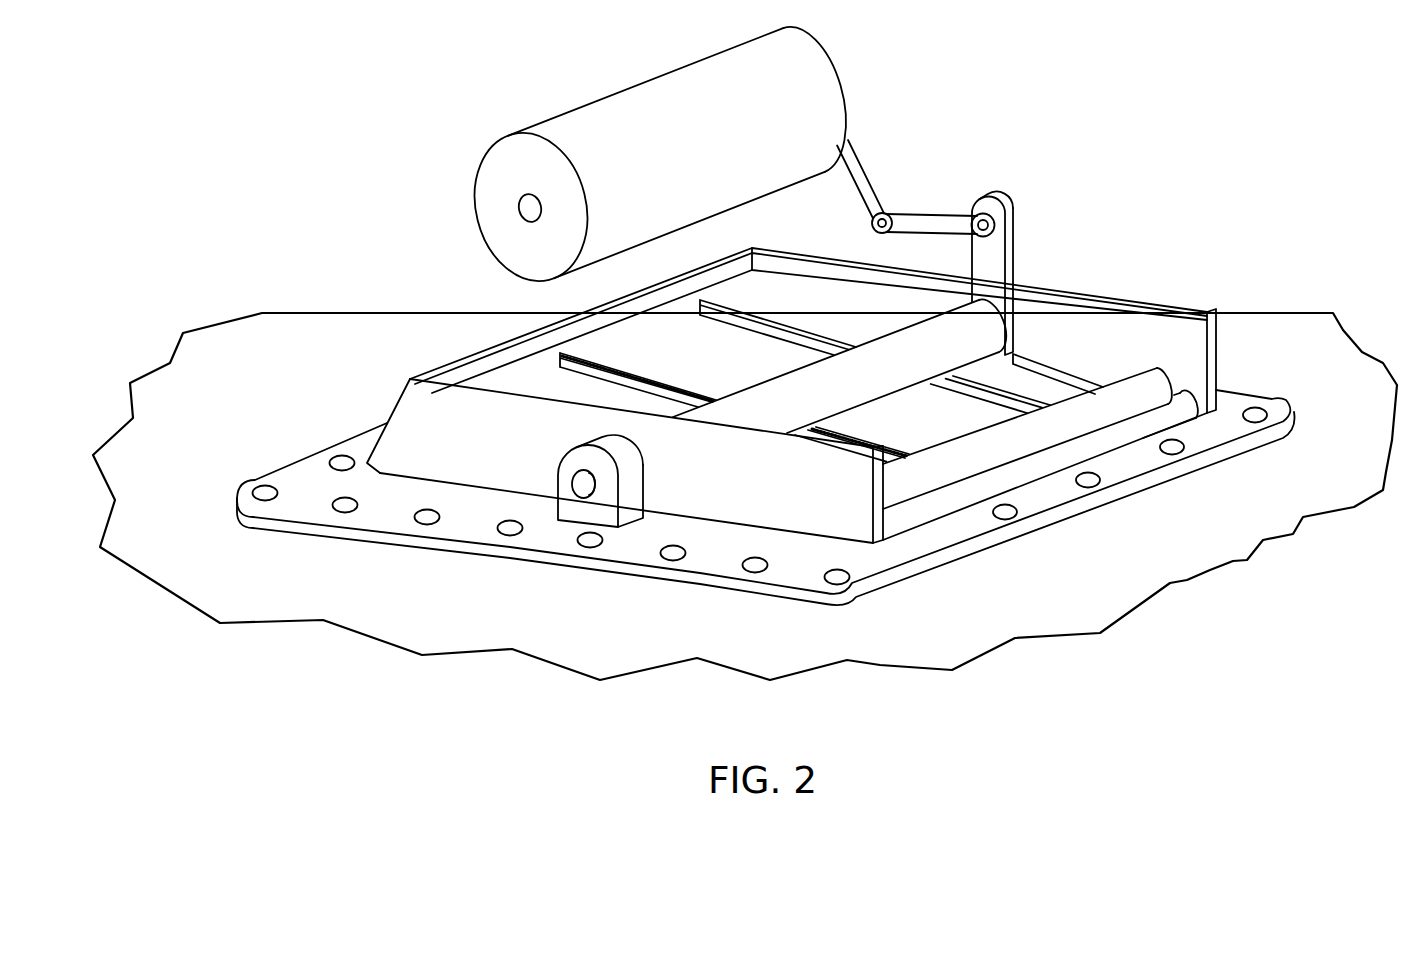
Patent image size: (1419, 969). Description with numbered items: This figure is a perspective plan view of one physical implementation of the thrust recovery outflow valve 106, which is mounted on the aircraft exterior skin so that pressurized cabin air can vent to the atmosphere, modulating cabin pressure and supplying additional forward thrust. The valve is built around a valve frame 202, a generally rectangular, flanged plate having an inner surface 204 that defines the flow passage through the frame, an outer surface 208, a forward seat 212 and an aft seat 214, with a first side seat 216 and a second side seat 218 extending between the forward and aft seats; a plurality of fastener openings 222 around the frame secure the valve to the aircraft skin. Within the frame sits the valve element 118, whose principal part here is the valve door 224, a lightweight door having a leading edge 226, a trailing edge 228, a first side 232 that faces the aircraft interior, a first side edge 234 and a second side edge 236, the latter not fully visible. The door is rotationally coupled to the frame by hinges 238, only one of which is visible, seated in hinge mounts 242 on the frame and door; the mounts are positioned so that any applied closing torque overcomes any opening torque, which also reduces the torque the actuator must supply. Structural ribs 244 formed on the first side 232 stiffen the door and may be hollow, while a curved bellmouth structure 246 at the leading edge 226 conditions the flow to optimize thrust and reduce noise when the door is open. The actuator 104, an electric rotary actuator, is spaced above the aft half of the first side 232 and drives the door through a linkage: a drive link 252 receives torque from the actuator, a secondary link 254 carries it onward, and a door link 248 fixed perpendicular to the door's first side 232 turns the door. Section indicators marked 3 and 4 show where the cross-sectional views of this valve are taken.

The actuator 104 is at (669, 76).
The thrust recovery outflow valve 106 is at (332, 291).
The valve element 118 is at (1090, 350).
The valve frame 202 is at (318, 458).
The inner surface 204 is at (462, 476).
The outer surface 208 is at (383, 465).
The forward seat 212 is at (953, 502).
The aft seat 214 is at (463, 368).
The first side seat 216 is at (1174, 320).
The second side seat 218 is at (530, 383).
The fastener openings 222 is at (263, 488).
The valve door 224 is at (617, 340).
The leading edge 226 is at (920, 487).
The trailing edge 228 is at (463, 358).
The first side 232 is at (786, 372).
The first side edge 234 is at (1038, 358).
The second side edge 236 is at (877, 490).
The hinges 238 is at (587, 483).
The hinge mounts 242 is at (870, 400).
The structural ribs 244 is at (648, 372).
The bellmouth structure 246 is at (1165, 374).
The door link 248 is at (992, 198).
The drive link 252 is at (850, 176).
The secondary link 254 is at (943, 220).
The section line 3- 3 is at (1297, 447).
The section line 4- 4 is at (1133, 520).